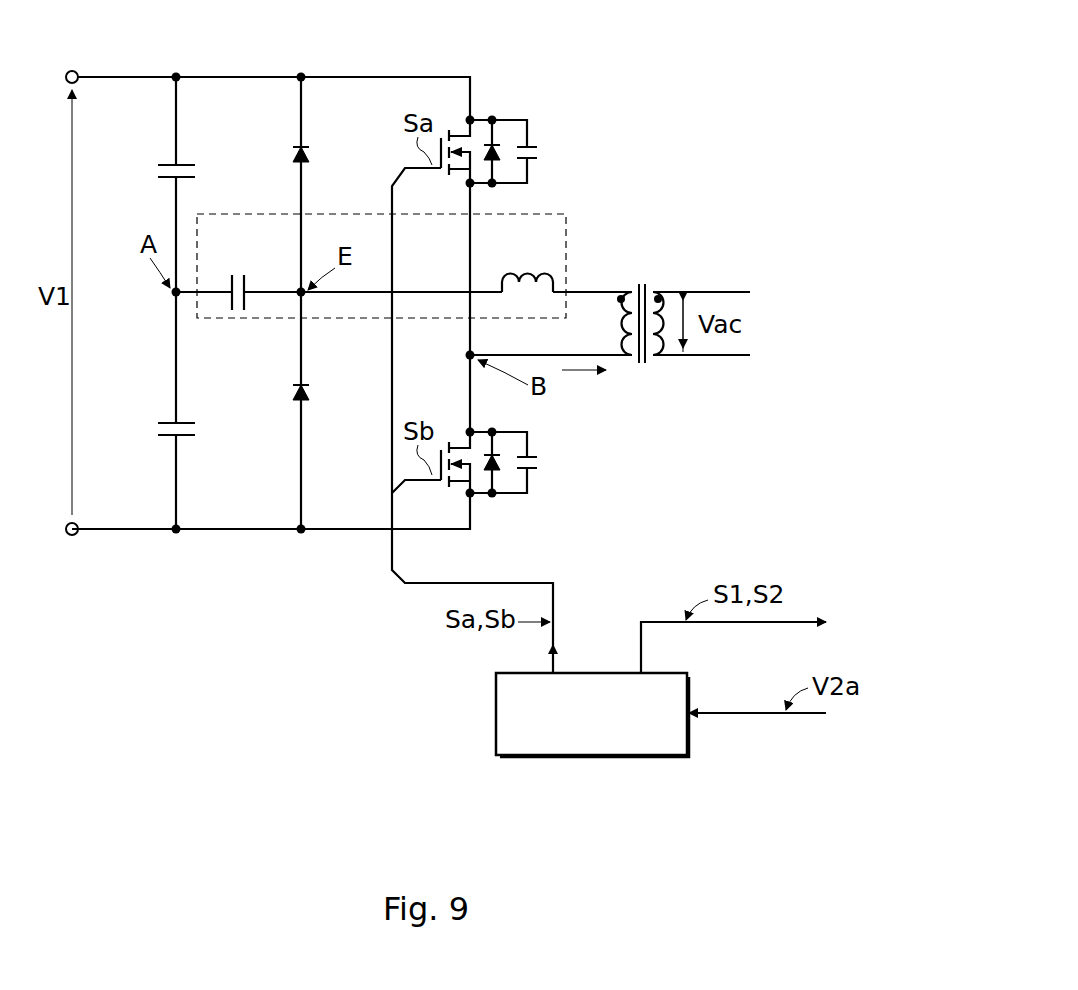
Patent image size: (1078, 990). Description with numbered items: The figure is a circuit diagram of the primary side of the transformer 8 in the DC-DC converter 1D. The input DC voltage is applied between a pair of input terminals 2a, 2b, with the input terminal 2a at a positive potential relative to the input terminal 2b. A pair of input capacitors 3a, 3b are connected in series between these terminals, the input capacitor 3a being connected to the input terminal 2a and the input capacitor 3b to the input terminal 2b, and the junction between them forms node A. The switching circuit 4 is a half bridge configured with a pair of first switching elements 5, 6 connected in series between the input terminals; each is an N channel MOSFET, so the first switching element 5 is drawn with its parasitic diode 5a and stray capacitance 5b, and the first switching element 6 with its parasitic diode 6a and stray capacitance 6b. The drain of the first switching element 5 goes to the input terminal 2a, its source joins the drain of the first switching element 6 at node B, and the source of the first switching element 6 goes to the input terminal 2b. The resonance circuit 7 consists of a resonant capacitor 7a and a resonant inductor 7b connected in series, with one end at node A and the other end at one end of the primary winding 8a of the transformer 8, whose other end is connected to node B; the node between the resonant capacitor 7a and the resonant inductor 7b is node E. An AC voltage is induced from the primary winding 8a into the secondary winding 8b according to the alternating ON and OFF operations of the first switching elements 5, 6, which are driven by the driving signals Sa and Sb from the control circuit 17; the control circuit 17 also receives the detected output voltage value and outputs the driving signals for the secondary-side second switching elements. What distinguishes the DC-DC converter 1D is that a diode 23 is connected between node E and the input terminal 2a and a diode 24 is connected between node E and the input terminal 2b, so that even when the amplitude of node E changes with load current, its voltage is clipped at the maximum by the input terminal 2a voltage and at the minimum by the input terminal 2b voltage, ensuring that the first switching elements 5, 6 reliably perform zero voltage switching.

The DC-DC converter 1D is at (664, 35).
The input terminal 2a is at (73, 70).
The input terminal 2b is at (73, 536).
The input capacitor 3a is at (185, 164).
The input capacitor 3b is at (185, 422).
The switching circuit 4 is at (464, 44).
The first switching element 5 is at (458, 136).
The parasitic diode 5a is at (495, 146).
The stray capacitance 5b is at (532, 146).
The first switching element 6 is at (458, 440).
The parasitic diode 6a is at (494, 470).
The stray capacitance 6b is at (532, 470).
The resonance circuit 7 is at (548, 214).
The resonant capacitor 7a is at (236, 275).
The resonant inductor 7b is at (515, 276).
The transformer 8 is at (640, 273).
The primary winding 8a is at (622, 290).
The secondary winding 8b is at (655, 290).
The control circuit 17 is at (664, 672).
The diode 23 is at (308, 155).
The diode 24 is at (308, 393).